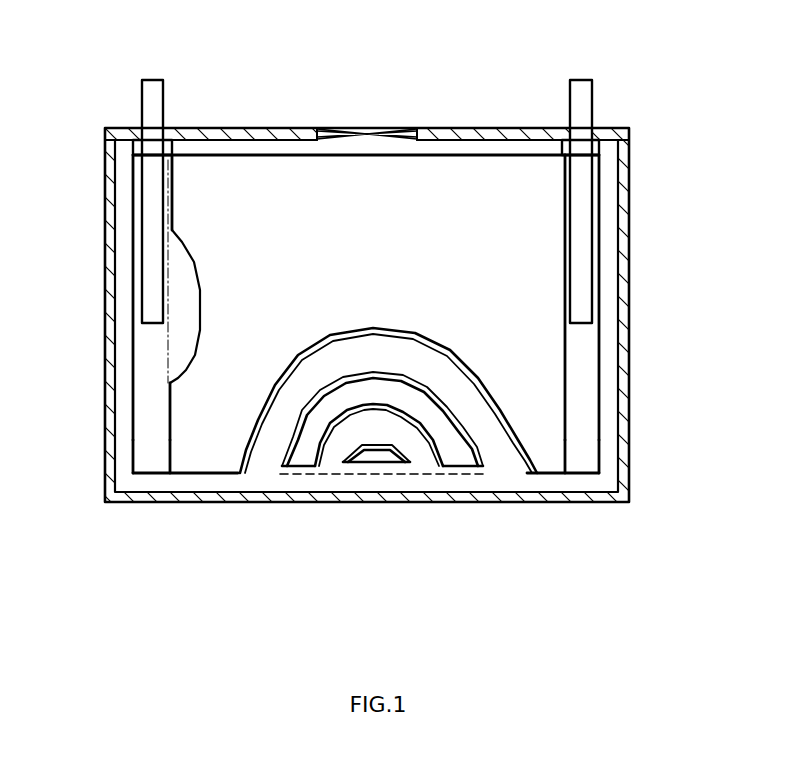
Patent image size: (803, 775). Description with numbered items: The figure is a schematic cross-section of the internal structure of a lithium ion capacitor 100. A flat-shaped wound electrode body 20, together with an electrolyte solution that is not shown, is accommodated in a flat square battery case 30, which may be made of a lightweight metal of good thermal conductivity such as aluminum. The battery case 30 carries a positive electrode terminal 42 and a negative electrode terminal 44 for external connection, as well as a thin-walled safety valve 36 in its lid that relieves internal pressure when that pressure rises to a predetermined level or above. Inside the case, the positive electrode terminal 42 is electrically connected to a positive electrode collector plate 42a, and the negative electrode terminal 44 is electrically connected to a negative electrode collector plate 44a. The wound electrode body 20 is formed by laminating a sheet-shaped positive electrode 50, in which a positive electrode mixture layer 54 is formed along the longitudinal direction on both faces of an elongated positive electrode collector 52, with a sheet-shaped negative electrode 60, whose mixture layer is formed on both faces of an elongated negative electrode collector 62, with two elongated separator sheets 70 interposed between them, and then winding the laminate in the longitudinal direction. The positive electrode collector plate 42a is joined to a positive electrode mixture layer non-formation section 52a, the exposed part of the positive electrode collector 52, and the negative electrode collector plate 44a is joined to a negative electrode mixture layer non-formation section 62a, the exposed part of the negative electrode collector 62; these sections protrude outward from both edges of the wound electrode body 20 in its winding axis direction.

The lithium ion capacitor 100 is at (630, 95).
The wound electrode body 20 is at (260, 180).
The battery case 30 is at (630, 233).
The safety valve 36 is at (368, 128).
The positive electrode terminal 42 is at (155, 78).
The positive electrode collector plate 42a is at (155, 218).
The negative electrode terminal 44 is at (582, 78).
The negative electrode collector plate 44a is at (582, 185).
The positive electrode 50 is at (260, 458).
The positive electrode collector 52 is at (133, 377).
The positive electrode mixture layer non-formation section 52a is at (148, 450).
The positive electrode mixture layer 54 is at (200, 280).
The negative electrode 60 is at (333, 455).
The negative electrode collector 62 is at (602, 335).
The negative electrode mixture layer non-formation section 62a is at (587, 378).
The separator sheet 70 is at (205, 408).